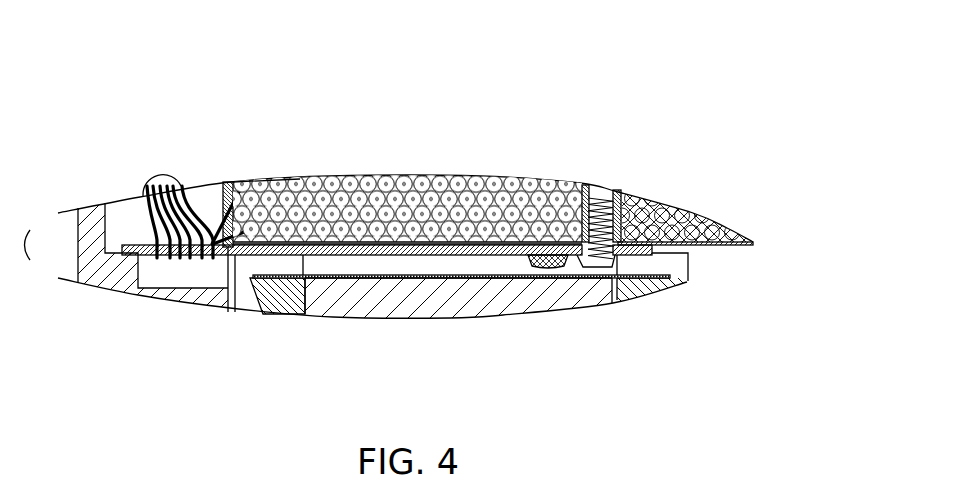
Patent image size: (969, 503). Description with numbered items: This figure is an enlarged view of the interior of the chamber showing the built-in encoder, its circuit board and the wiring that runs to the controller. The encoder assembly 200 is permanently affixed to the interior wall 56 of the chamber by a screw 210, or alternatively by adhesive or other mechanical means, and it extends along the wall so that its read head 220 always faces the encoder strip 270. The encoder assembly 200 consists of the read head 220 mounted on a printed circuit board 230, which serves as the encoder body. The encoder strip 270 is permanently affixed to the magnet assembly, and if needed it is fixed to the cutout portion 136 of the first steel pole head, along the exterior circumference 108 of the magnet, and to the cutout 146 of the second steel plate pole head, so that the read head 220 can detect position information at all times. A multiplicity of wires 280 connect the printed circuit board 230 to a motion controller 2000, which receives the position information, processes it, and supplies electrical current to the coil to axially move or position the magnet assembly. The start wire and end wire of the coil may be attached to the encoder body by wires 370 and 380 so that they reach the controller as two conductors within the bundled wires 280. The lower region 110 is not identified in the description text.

The motion controller 2000 is at (162, 171).
The wires 280 is at (180, 187).
The wire 380 is at (215, 183).
The wire 370 is at (266, 180).
The printed circuit board 230 is at (343, 243).
The read head 220 is at (553, 240).
The encoder assembly 200 is at (485, 243).
The screw 210 is at (604, 197).
The interior wall 56 is at (723, 243).
The encoder strip 270 is at (640, 293).
The cutout 146 is at (687, 283).
The cutout portion 136 is at (240, 283).
The exterior circumference 108 is at (460, 283).
The base 110 is at (410, 292).